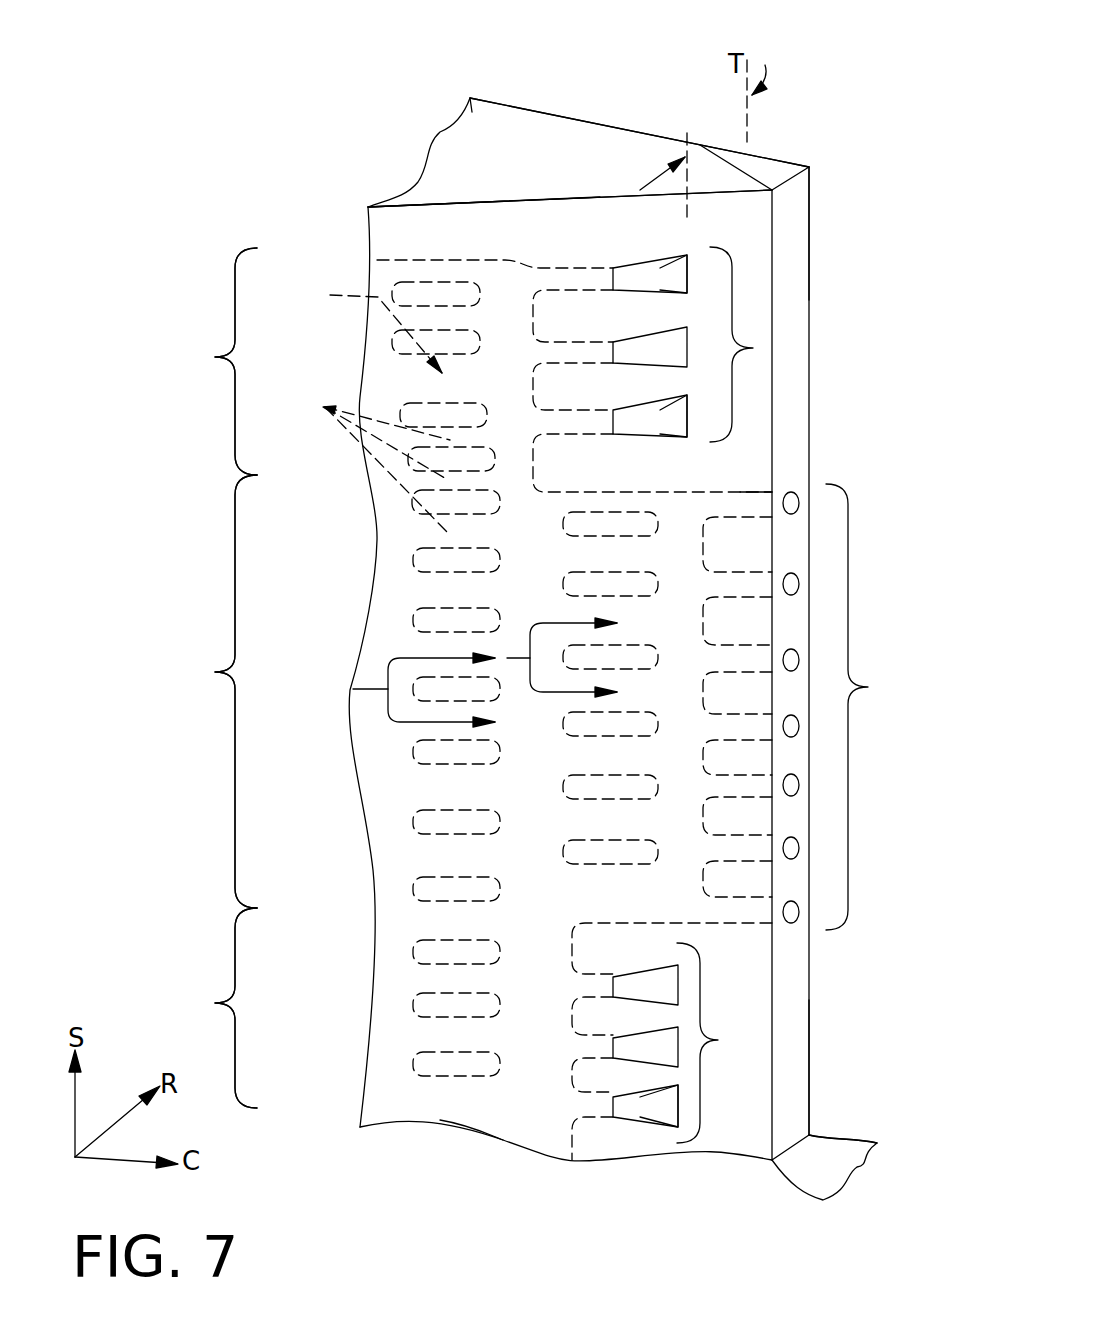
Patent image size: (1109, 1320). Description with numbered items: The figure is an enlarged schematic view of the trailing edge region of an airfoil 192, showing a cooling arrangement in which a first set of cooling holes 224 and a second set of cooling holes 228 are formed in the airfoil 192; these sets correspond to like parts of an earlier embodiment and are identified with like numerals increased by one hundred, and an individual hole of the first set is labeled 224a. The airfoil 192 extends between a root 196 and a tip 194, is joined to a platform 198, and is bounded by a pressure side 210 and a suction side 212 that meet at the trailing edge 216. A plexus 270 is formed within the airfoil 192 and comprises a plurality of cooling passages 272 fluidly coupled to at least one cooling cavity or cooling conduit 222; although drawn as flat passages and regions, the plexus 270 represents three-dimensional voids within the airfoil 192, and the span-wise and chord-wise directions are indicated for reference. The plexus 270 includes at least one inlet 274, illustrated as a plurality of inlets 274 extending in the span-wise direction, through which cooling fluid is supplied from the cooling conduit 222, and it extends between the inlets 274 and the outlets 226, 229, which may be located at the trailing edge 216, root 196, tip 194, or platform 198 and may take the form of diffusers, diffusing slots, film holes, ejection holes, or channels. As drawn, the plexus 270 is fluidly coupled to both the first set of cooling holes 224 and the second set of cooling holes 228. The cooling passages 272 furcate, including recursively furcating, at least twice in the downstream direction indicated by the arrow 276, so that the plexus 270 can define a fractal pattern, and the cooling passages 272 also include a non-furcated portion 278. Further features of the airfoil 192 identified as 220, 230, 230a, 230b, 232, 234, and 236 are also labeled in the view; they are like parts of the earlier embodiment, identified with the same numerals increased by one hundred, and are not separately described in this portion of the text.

The airfoil 192 is at (572, 137).
The tip 194 is at (748, 162).
The root 196 is at (503, 1138).
The platform 198 is at (817, 1170).
The pressure side 210 is at (467, 203).
The suction side 212 is at (530, 99).
The trailing edge 216 is at (783, 980).
The cooling circuit 220 is at (586, 897).
The cooling cavity 222 is at (403, 590).
The first set of cooling holes 224 is at (753, 348).
The impingement opening 224a is at (677, 422).
The outlet 226 is at (677, 283).
The second set of cooling holes 228 is at (868, 687).
The outlet 229 is at (643, 1102).
The airfoil span 230 is at (215, 266).
The first span portion 230a is at (215, 357).
The second span portion 230b is at (215, 1003).
The trailing edge 232 is at (840, 1120).
The leading edge portion 234 is at (822, 165).
The middle span portion 236 is at (215, 672).
The plexus 270 is at (350, 327).
The cooling passages 272 is at (357, 462).
The inlet 274 is at (407, 790).
The arrow 276 is at (372, 688).
The non-furcated portion 278 is at (695, 507).